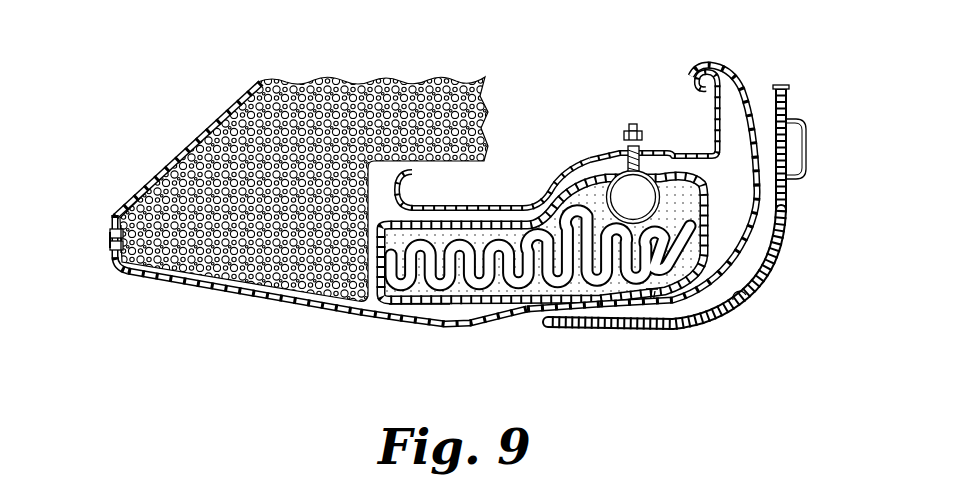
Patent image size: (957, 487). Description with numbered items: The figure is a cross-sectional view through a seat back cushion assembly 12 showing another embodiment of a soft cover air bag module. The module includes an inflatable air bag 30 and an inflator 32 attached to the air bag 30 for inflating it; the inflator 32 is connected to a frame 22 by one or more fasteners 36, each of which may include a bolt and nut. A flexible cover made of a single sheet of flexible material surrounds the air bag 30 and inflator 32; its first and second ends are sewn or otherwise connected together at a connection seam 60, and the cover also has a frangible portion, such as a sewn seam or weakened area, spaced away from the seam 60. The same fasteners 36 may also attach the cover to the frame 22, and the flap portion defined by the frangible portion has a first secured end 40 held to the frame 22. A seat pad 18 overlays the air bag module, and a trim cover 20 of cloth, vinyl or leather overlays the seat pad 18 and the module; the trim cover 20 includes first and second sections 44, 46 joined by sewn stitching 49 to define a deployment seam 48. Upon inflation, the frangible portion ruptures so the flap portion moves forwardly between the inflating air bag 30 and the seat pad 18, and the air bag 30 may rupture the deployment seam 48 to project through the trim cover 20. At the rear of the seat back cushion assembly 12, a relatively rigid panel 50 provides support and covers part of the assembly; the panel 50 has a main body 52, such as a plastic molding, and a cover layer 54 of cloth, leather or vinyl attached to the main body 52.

The seat back cushion assembly 12 is at (160, 82).
The seat pad 18 is at (264, 202).
The trim cover 20 is at (140, 290).
The frame 22 is at (714, 145).
The inflatable air bag 30 is at (673, 267).
The inflator 32 is at (645, 206).
The fasteners 36 is at (643, 140).
The first secured end 40 is at (607, 153).
The first section 44 is at (168, 160).
The second section 46 is at (258, 300).
The deployment seam 48 is at (100, 246).
The sewn stitching 49 is at (115, 240).
The panel 50 is at (777, 277).
The main body 52 is at (743, 297).
The cover layer 54 is at (787, 203).
The seam 60 is at (650, 303).